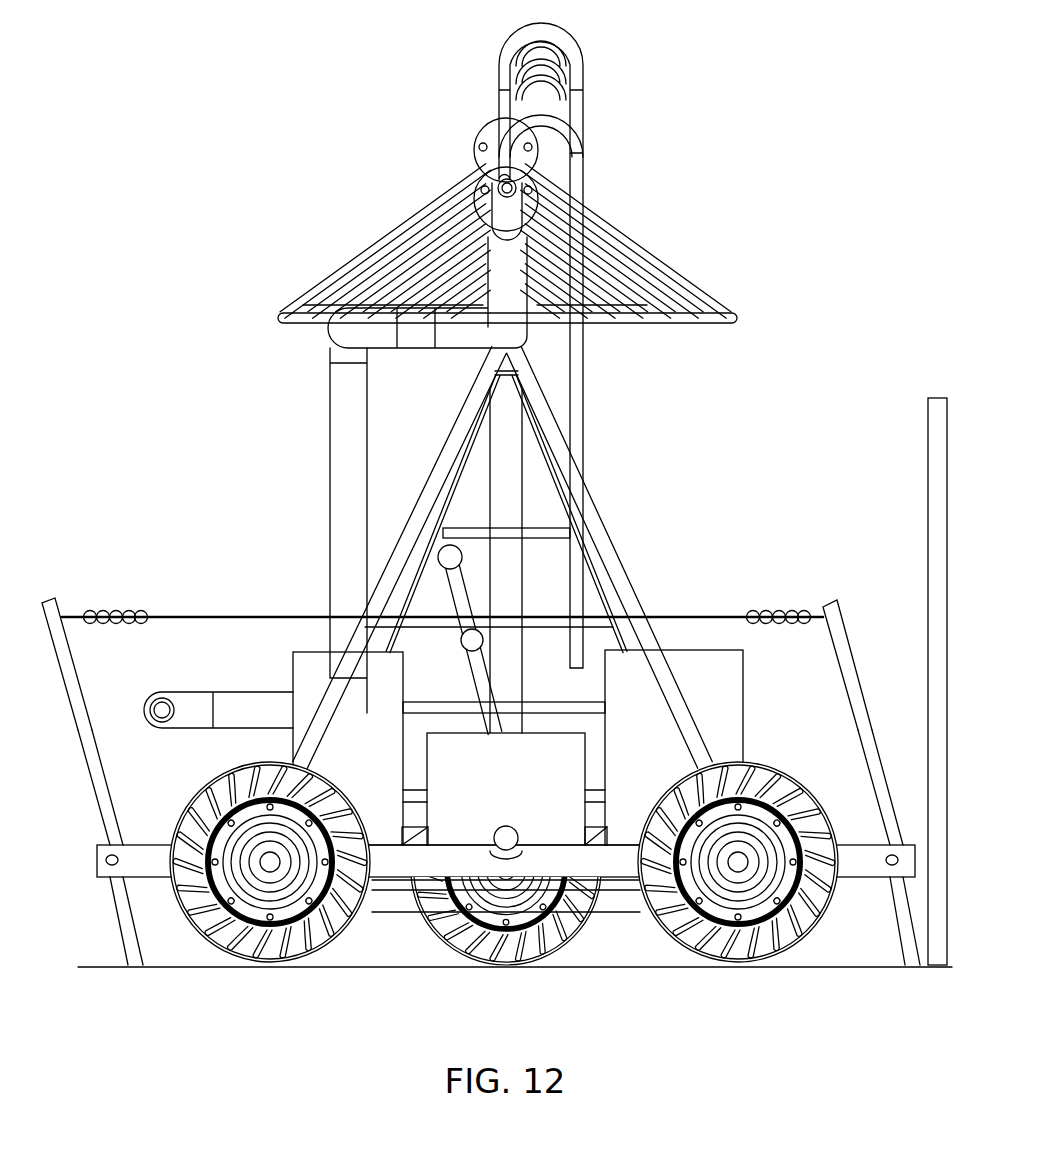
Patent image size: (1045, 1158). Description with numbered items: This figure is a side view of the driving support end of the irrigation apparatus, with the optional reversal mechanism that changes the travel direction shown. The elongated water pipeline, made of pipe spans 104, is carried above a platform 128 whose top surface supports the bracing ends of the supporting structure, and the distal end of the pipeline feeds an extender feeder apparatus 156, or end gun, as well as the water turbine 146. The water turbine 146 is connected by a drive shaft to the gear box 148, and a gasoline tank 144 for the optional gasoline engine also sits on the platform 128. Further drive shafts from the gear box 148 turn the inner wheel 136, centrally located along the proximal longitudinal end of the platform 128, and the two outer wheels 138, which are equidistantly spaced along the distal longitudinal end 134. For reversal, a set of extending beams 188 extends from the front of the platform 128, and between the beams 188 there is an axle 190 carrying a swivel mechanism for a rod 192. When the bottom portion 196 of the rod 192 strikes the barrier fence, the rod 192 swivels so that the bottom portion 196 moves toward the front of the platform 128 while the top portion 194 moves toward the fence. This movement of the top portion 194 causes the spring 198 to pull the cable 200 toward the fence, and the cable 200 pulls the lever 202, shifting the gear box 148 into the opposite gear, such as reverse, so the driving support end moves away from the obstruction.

The pipe spans 104 is at (487, 150).
The extender feeder apparatus 156 is at (514, 186).
The lever 202 is at (462, 593).
The cable 200 is at (660, 616).
The spring 198 is at (110, 611).
The top portion 194 is at (63, 662).
The rod 192 is at (74, 727).
The bottom portion 196 is at (120, 912).
The extending beams 188 is at (928, 465).
The axle 190 is at (108, 857).
The distal longitudinal end 134 is at (400, 862).
The inner wheel 136 is at (547, 940).
The platform 128 is at (610, 866).
The outer wheels 138 is at (222, 933).
The gasoline tank 144 is at (735, 705).
The water turbine 146 is at (400, 781).
The gear box 148 is at (540, 803).